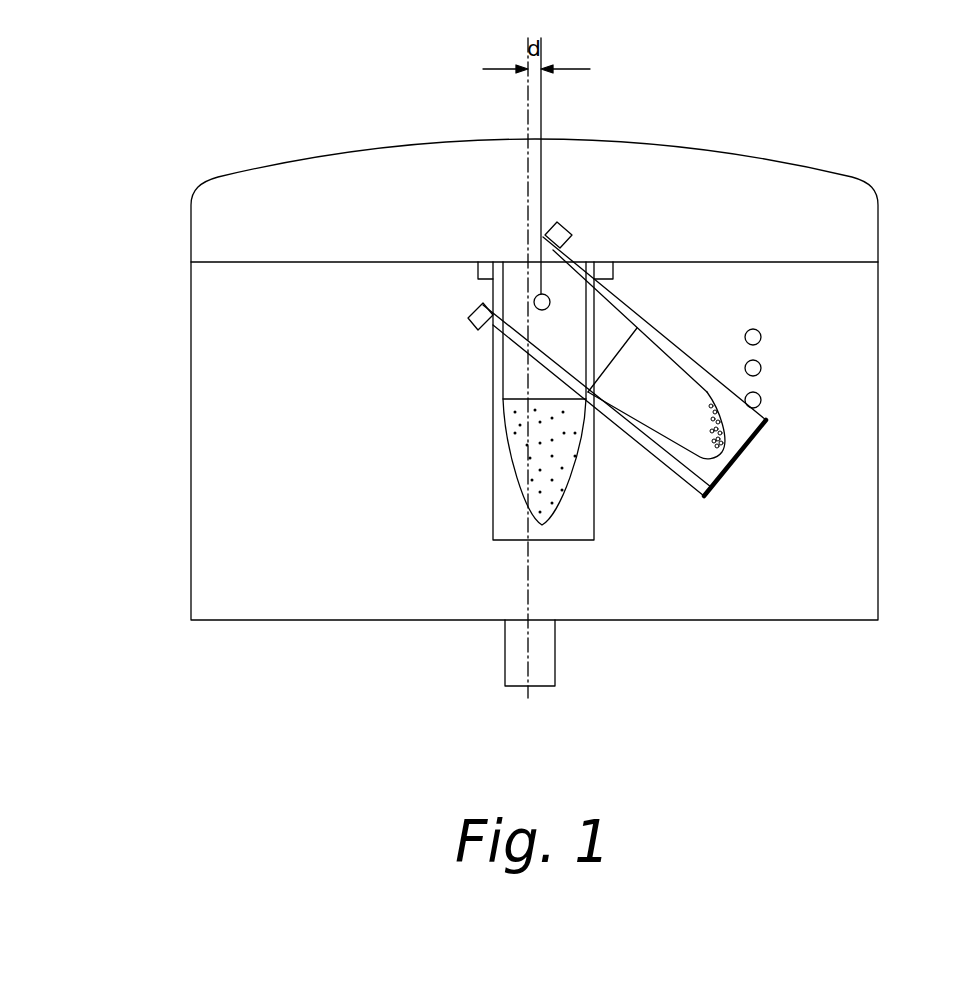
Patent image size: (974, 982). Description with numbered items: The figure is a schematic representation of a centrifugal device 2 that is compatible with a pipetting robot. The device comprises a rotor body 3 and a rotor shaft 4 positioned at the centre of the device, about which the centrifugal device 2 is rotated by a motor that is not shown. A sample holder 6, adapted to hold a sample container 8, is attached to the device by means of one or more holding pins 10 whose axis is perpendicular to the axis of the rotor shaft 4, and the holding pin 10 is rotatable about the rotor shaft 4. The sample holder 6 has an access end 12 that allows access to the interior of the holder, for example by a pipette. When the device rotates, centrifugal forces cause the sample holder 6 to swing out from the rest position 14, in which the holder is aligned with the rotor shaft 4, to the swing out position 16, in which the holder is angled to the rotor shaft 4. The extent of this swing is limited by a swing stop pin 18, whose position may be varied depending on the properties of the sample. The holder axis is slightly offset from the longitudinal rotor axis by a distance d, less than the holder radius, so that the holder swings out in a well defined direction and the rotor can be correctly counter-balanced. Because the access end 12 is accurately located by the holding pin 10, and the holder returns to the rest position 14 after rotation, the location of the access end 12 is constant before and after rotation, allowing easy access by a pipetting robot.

The centrifugal device 2 is at (128, 351).
The rotor body 3 is at (313, 620).
The rotor shaft 4 is at (528, 666).
The sample holder 6 is at (747, 423).
The sample container 8 is at (702, 455).
The holding pin 10 is at (530, 262).
The access end 12 is at (542, 292).
The rest position 14 is at (512, 518).
The swing out position 16 is at (752, 455).
The swing stop pin 18 is at (762, 394).